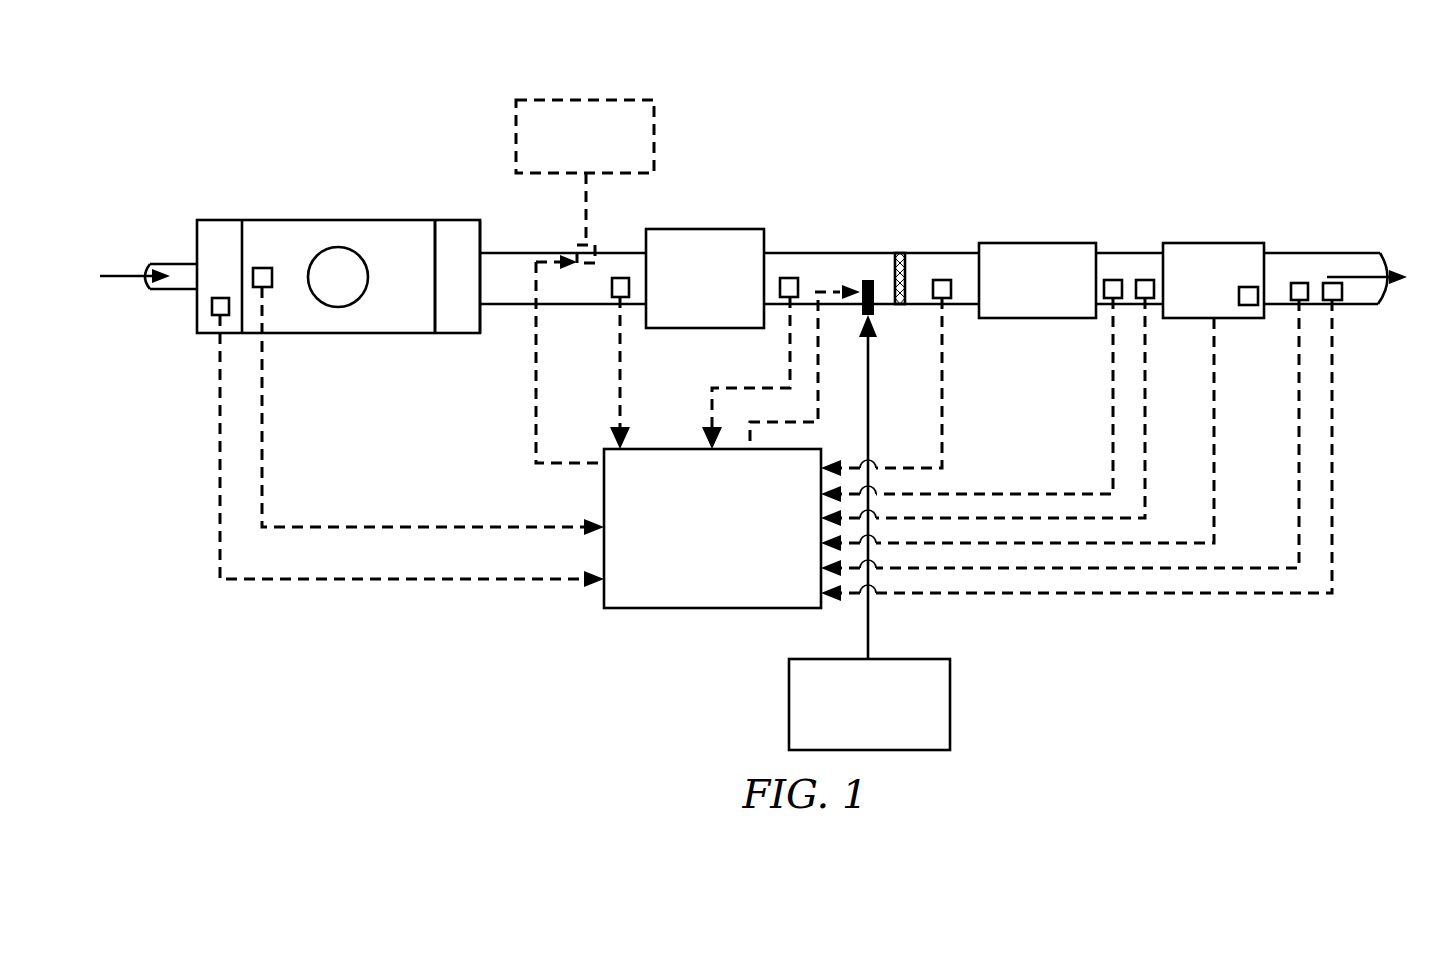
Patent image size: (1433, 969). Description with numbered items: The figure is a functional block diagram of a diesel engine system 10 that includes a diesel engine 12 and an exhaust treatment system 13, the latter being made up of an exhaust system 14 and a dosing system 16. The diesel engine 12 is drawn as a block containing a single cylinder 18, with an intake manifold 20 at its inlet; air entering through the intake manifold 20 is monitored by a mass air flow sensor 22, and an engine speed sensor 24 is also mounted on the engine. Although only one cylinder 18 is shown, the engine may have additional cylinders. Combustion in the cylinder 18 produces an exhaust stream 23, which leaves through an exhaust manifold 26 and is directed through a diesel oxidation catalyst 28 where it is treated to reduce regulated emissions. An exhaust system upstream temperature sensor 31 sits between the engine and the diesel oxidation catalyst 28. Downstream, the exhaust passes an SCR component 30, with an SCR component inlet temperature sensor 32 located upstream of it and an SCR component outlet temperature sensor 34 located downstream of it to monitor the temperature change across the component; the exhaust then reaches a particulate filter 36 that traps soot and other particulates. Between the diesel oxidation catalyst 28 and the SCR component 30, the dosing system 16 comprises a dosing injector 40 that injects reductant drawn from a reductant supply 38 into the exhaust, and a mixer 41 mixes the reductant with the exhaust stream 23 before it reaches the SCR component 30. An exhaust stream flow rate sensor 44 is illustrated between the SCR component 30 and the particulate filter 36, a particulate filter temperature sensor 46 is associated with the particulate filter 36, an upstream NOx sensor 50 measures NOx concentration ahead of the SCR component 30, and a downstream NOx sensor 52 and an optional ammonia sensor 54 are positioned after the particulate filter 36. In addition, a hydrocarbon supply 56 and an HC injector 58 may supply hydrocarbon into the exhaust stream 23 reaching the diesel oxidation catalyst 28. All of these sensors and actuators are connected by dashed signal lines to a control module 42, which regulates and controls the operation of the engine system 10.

The diesel engine system 10 is at (483, 108).
The diesel engine 12 is at (307, 220).
The exhaust treatment system 13 is at (1103, 136).
The exhaust system 14 is at (1155, 363).
The dosing system 16 is at (1053, 602).
The cylinder 18 is at (343, 248).
The intake manifold 20 is at (168, 263).
The mass air flow (MAF) sensor 22 is at (211, 307).
The exhaust stream 23 is at (1350, 278).
The engine speed sensor 24 is at (262, 267).
The exhaust manifold 26 is at (450, 220).
The diesel oxidation catalyst (DOC) 28 is at (703, 229).
The SCR component 30 is at (1033, 243).
The exhaust system upstream temperature sensor 31 is at (612, 287).
The SCR component inlet temperature sensor 32 is at (790, 278).
The SCR component outlet temperature sensor 34 is at (1112, 280).
The particulate filter (PF) 36 is at (1218, 243).
The reductant supply 38 is at (925, 659).
The dosing injector 40 is at (868, 280).
The mixer 41 is at (900, 253).
The control module 42 is at (604, 480).
The exhaust stream flow rate sensor 44 is at (1145, 280).
The particulate filter temperature sensor 46 is at (1248, 287).
The upstream NOx sensor 50 is at (942, 280).
The downstream NOx sensor 52 is at (1291, 293).
The ammonia (NH3) sensor 54 is at (1343, 292).
The hydrocarbon (HC) supply 56 is at (625, 99).
The HC injector 58 is at (592, 247).